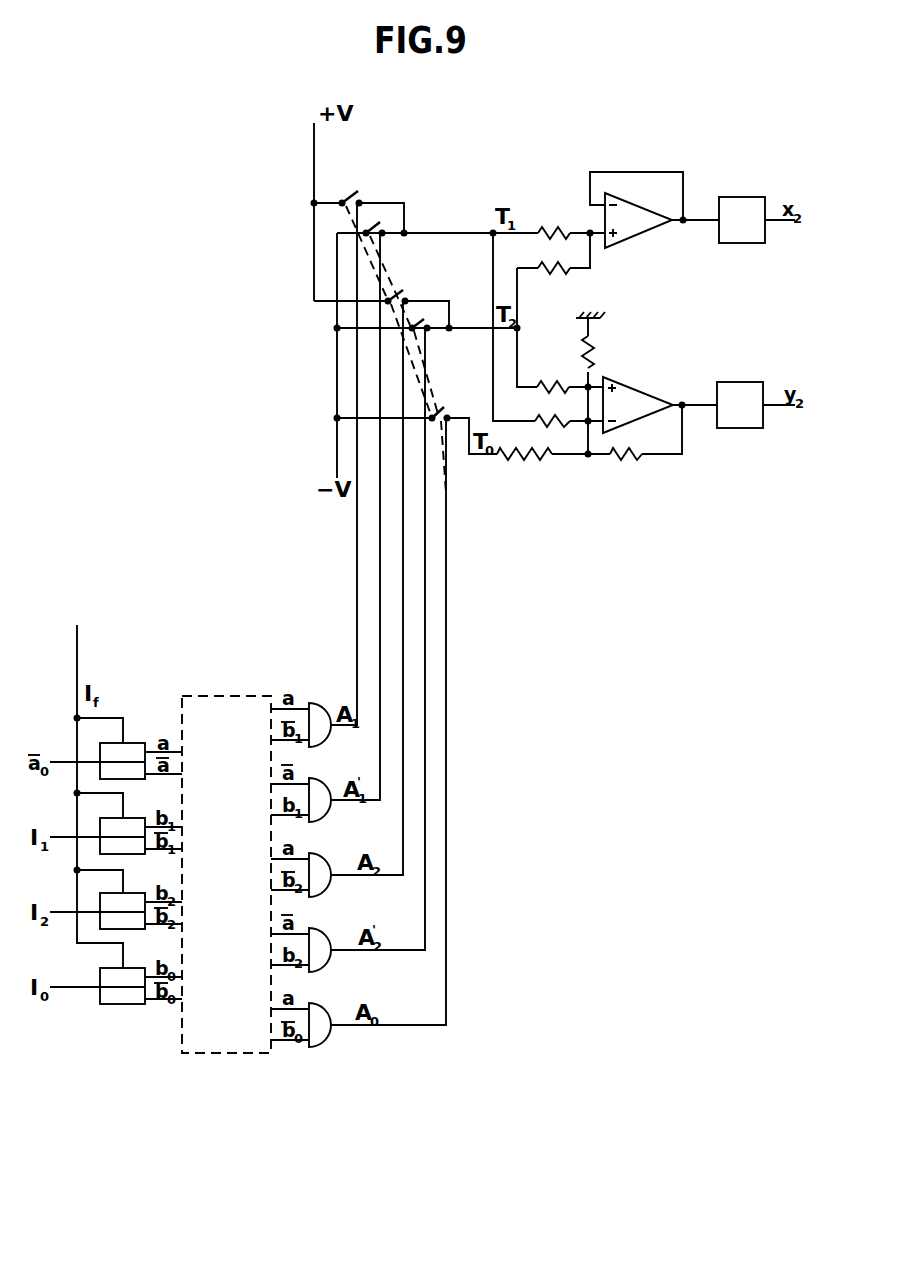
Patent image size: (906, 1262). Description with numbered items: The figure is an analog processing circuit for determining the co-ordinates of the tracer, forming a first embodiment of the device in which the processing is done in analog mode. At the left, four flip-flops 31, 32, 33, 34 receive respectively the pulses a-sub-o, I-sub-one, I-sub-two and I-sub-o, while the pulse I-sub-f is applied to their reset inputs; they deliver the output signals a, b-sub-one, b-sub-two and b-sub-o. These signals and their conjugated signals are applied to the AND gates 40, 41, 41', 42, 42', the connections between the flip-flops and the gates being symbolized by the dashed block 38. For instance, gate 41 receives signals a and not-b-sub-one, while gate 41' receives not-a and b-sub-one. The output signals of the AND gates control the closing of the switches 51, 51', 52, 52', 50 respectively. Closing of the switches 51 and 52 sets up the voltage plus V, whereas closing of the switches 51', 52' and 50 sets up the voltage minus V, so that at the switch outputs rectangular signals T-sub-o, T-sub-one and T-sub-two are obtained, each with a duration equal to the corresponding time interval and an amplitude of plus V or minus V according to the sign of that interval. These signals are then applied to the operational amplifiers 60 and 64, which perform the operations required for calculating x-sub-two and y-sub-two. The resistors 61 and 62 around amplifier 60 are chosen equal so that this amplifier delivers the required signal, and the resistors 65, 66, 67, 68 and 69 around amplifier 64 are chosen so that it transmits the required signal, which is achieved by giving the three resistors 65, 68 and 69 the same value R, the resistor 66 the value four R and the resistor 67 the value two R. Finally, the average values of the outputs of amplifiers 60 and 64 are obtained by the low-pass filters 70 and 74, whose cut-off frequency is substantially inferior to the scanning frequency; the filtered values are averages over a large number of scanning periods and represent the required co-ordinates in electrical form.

The flip-flop 31 is at (108, 752).
The flip-flop 32 is at (108, 827).
The flip-flop 33 is at (108, 902).
The flip-flop 34 is at (108, 977).
The block 38 is at (225, 1053).
The AND gate 40 is at (322, 1010).
The AND gate 41 is at (327, 699).
The AND gate 41' is at (338, 783).
The AND gate 42 is at (337, 858).
The AND gate 42' is at (342, 936).
The switch 50 is at (441, 406).
The switch 51 is at (348, 179).
The switch 51' is at (390, 200).
The switch 52 is at (405, 273).
The switch 52' is at (434, 298).
The operational amplifier 60 is at (644, 232).
The resistor 61 is at (545, 233).
The resistor 62 is at (545, 272).
The operational amplifier 64 is at (642, 395).
The resistor 65 is at (598, 355).
The resistor 66 is at (545, 379).
The resistor 67 is at (546, 417).
The resistor 68 is at (521, 468).
The resistor 69 is at (631, 466).
The low-pass filter 70 is at (738, 200).
The low-pass filter 74 is at (744, 388).